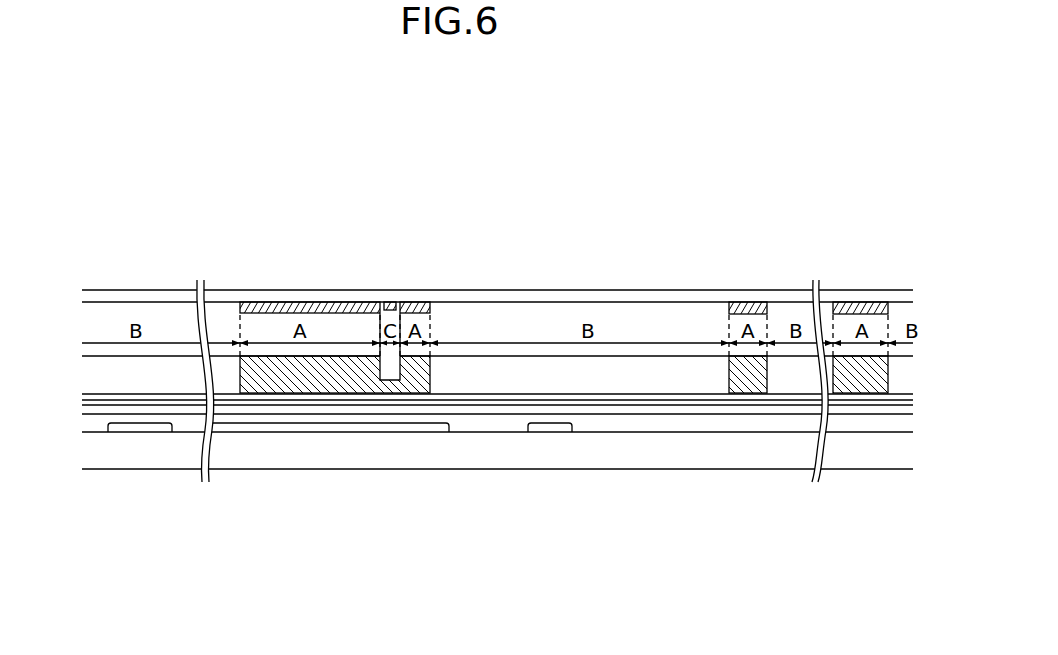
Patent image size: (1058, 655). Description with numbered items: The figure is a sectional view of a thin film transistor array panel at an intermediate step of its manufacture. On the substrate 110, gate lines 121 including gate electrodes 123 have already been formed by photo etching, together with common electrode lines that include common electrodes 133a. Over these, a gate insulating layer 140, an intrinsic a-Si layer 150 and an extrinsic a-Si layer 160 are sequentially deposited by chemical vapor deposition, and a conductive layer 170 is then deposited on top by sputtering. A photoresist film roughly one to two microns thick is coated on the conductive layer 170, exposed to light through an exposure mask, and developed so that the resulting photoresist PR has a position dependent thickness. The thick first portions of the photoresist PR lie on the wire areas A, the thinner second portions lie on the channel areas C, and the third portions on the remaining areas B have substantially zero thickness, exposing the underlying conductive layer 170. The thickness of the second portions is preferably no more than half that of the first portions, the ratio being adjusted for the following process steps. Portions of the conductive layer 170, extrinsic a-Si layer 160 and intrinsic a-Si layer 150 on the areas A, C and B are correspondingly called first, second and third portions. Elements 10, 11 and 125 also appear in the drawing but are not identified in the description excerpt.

The upper substrate 10 is at (483, 292).
The black matrix 11 is at (325, 306).
The photoresist PR is at (620, 372).
The substrate 110 is at (480, 463).
The gate line 121 is at (233, 433).
The gate electrode 123 is at (440, 433).
The storage line 125 is at (128, 433).
The common electrode 133a is at (556, 428).
The gate insulating layer 140 is at (511, 426).
The intrinsic a-Si layer 150 is at (291, 410).
The extrinsic a-Si layer 160 is at (260, 402).
The conductive layer 170 is at (325, 396).